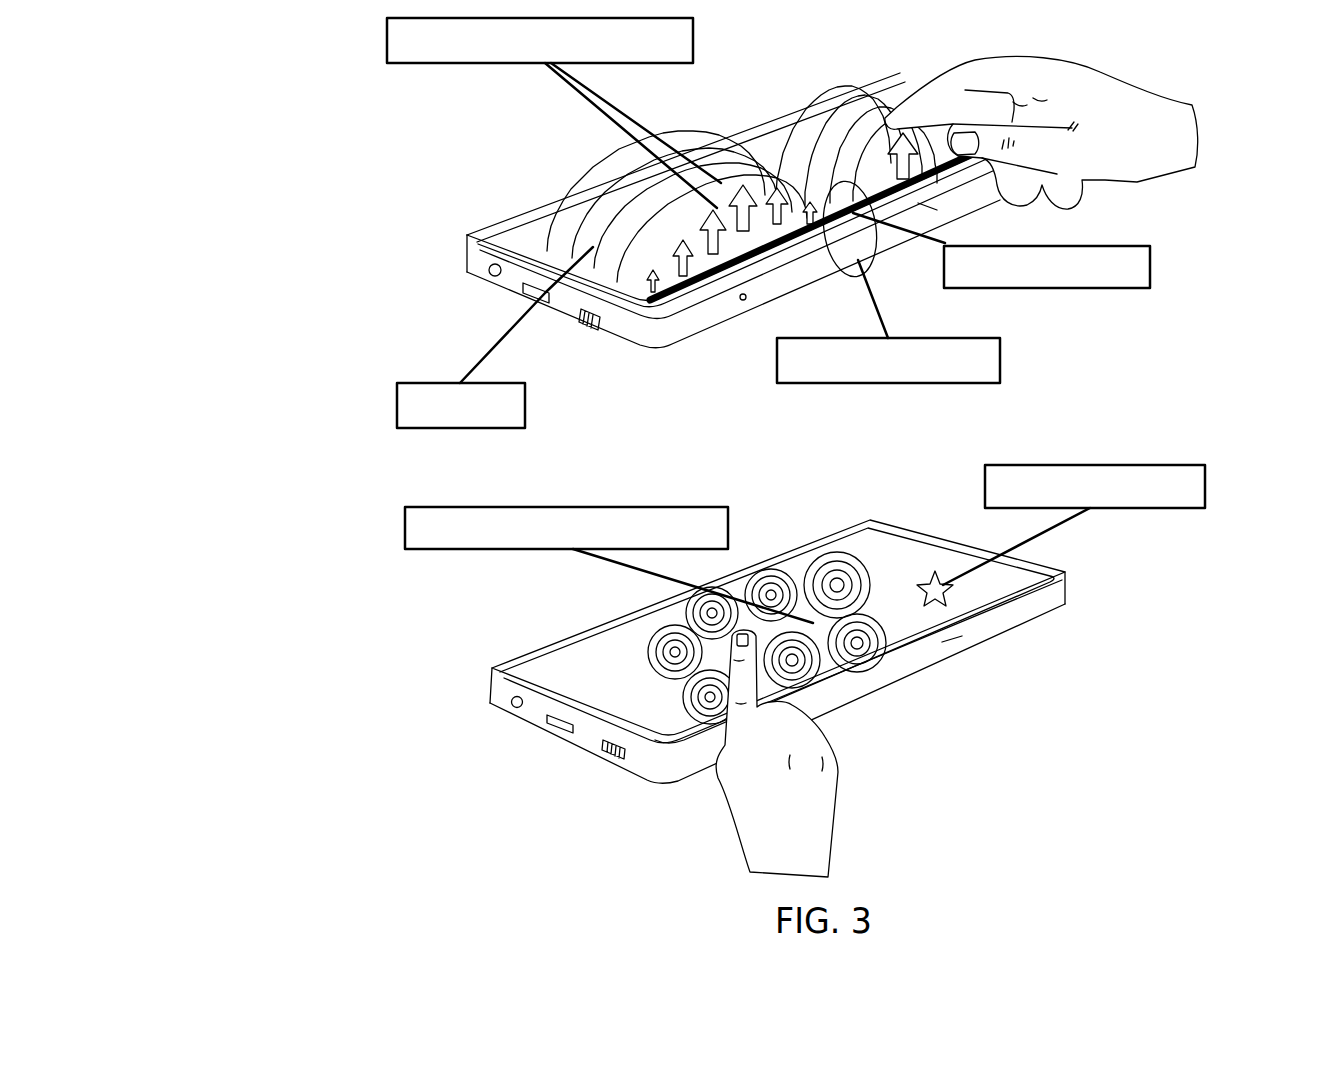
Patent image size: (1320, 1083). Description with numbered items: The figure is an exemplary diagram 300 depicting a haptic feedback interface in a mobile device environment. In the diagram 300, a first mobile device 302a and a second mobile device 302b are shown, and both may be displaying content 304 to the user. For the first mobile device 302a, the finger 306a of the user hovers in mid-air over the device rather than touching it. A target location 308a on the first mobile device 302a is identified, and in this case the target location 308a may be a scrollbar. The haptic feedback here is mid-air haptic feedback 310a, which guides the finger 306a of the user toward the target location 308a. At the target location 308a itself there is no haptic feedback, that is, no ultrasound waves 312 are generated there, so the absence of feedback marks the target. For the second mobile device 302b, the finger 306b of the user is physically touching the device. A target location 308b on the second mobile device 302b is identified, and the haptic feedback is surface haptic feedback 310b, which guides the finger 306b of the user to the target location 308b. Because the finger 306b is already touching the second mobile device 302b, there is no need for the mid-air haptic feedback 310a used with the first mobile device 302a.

The exemplary diagram 300 is at (230, 106).
The first mobile device 302a is at (462, 254).
The second mobile device 302b is at (489, 689).
The content 304 is at (395, 406).
The finger 306a is at (950, 70).
The finger 306b is at (733, 690).
The target location 308a is at (1002, 360).
The target location 308b is at (1208, 487).
The mid-air haptic feedback 310a is at (387, 42).
The surface haptic feedback 310b is at (405, 526).
The no haptic feedback (no ultrasound waves) 312 is at (1153, 267).